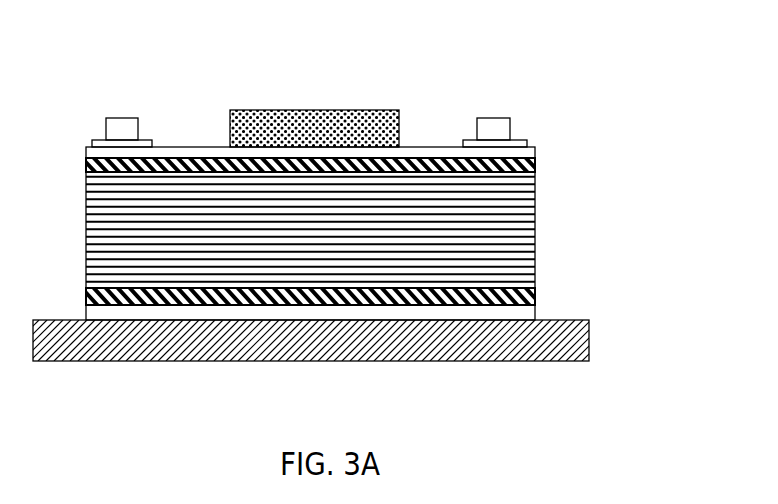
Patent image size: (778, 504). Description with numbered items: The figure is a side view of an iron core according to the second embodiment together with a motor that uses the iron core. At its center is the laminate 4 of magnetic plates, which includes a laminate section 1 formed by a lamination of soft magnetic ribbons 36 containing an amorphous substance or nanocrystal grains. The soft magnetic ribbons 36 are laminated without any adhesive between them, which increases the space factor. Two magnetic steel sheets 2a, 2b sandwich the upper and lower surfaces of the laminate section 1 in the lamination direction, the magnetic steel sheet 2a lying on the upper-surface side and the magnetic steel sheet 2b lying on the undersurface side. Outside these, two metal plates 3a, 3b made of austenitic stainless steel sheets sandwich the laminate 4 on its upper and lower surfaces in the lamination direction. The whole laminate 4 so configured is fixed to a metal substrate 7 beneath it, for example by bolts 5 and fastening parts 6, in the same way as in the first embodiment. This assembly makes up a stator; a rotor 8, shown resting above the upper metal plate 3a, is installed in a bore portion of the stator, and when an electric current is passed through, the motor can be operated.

The laminate section 1 is at (537, 173).
The magnetic steel sheet 2a is at (537, 163).
The magnetic steel sheet 2b is at (537, 297).
The metal plate 3a is at (535, 147).
The metal plate 3b is at (537, 308).
The laminate 4 is at (85, 162).
The bolt 5 is at (503, 118).
The fastening part 6 is at (523, 132).
The metal substrate 7 is at (313, 361).
The rotor 8 is at (310, 110).
The soft magnetic ribbon 36 is at (182, 200).